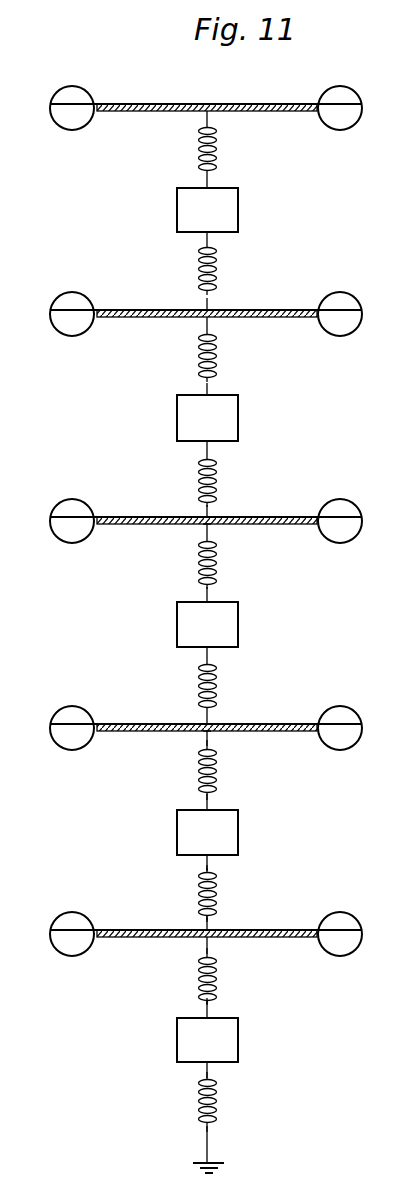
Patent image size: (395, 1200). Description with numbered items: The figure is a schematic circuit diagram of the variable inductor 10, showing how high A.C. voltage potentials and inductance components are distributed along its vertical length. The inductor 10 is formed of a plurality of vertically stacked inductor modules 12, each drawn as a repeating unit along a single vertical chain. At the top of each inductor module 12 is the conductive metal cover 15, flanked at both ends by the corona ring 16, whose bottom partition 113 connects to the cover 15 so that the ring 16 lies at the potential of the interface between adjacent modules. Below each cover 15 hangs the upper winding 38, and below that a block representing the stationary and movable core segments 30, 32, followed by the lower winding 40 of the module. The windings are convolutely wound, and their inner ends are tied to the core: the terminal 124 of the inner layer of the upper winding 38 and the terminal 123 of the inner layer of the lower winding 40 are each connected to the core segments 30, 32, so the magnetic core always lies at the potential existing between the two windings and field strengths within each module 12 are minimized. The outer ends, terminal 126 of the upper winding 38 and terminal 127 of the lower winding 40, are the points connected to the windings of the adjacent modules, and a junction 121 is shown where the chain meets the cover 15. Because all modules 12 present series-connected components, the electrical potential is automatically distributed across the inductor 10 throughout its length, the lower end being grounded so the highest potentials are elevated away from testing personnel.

The variable inductor 10 is at (72, 205).
The inductor module 12 is at (95, 245).
The conductive metal cover 15 is at (244, 104).
The corona ring 16 is at (77, 86).
The stationary core segment 30 is at (262, 623).
The movable core segment 32 is at (239, 203).
The upper winding 38 is at (218, 147).
The lower winding 40 is at (218, 267).
The bottom partition 113 is at (66, 106).
The junction 121 is at (205, 524).
The terminal of inner layer of lower winding 123 is at (216, 868).
The terminal of inner layer of upper winding 124 is at (216, 795).
The terminal of outer layer of upper winding 126 is at (216, 745).
The terminal of outer layer of lower winding 127 is at (216, 918).